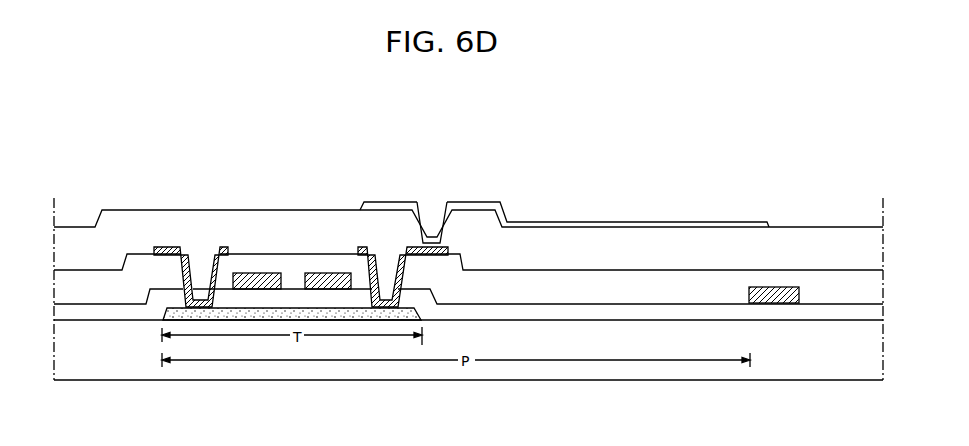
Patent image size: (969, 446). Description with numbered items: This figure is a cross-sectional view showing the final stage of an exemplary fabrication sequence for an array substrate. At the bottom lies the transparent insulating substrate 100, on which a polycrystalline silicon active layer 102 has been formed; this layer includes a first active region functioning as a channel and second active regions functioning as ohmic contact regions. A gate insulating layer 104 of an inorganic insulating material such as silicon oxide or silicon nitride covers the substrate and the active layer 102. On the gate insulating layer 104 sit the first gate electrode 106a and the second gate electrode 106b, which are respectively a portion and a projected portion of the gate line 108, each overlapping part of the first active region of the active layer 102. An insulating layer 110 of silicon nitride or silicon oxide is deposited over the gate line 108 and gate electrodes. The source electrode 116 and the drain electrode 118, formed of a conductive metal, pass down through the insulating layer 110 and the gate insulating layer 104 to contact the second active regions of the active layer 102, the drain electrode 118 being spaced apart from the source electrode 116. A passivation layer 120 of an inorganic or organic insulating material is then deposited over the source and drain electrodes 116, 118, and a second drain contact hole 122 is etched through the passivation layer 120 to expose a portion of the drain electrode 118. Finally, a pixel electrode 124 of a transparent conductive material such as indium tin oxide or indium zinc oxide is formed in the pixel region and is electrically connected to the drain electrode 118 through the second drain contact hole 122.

The transparent insulating substrate 100 is at (827, 356).
The polycrystalline silicon active layer 102 is at (343, 310).
The gate insulating layer 104 is at (560, 303).
The first gate electrode 106a is at (263, 273).
The second gate electrode 106b is at (330, 275).
The gate line 108 is at (777, 303).
The insulating layer 110 is at (636, 269).
The source electrode 116 is at (172, 247).
The drain electrode 118 is at (370, 247).
The passivation layer 120 is at (208, 210).
The second drain contact hole 122 is at (432, 208).
The pixel electrode 124 is at (752, 220).